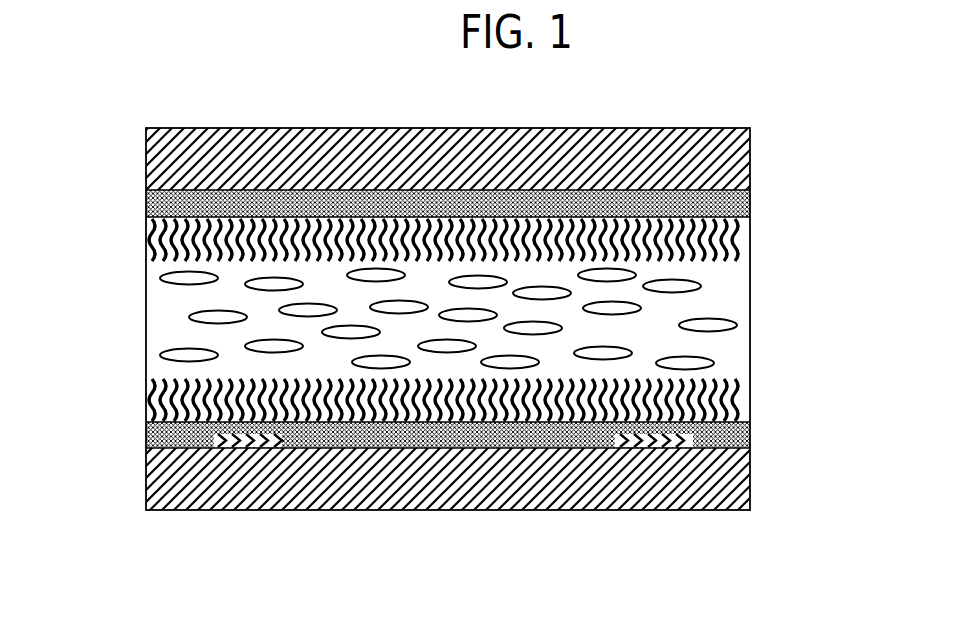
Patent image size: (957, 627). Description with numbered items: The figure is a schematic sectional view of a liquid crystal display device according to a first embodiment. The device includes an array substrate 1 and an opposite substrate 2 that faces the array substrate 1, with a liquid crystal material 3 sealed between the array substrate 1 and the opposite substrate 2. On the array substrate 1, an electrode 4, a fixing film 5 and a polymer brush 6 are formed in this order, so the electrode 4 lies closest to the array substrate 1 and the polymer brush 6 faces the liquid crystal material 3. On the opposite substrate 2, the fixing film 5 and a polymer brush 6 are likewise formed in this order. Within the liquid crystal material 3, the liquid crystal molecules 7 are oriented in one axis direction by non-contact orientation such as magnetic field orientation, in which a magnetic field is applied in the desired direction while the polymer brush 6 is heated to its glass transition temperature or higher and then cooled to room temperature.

The array substrate 1 is at (750, 470).
The opposite substrate 2 is at (750, 155).
The liquid crystal material 3 is at (735, 345).
The electrode 4 is at (275, 447).
The fixing film 5 is at (146, 195).
The polymer brush 6 is at (745, 232).
The liquid crystal molecules 7 is at (176, 356).